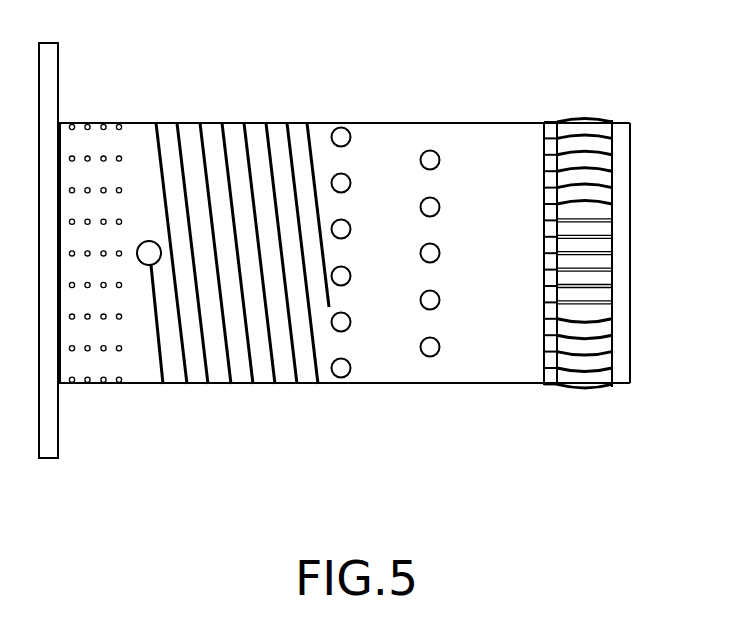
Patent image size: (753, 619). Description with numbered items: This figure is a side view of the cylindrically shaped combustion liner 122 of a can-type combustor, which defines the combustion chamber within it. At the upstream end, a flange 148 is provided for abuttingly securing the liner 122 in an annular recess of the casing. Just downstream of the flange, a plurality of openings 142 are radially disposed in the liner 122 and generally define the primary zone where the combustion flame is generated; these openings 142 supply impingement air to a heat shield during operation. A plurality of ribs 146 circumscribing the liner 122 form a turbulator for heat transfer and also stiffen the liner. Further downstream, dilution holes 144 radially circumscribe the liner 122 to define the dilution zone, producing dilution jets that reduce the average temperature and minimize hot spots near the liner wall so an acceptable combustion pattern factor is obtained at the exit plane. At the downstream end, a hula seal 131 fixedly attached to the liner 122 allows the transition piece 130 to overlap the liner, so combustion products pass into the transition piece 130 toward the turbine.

The combustion liner 122 is at (336, 298).
The transition piece 130 is at (623, 205).
The seal 131 is at (586, 121).
The openings 142 is at (72, 223).
The dilution holes 144 is at (428, 155).
The ribs 146 is at (200, 122).
The flange 148 is at (55, 460).